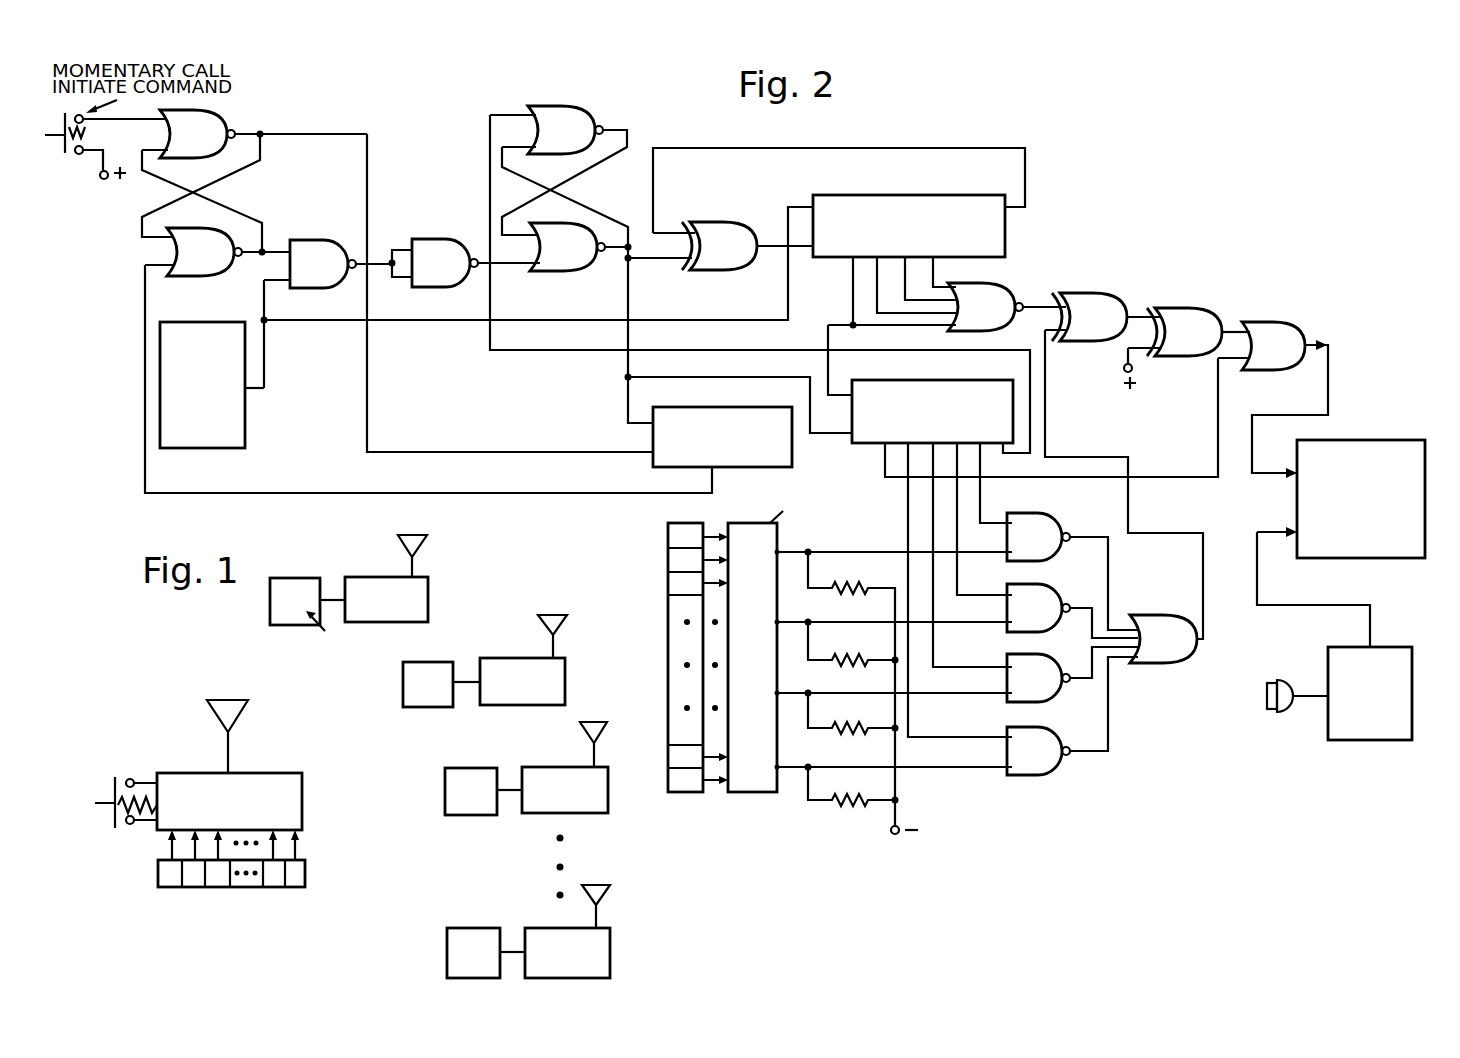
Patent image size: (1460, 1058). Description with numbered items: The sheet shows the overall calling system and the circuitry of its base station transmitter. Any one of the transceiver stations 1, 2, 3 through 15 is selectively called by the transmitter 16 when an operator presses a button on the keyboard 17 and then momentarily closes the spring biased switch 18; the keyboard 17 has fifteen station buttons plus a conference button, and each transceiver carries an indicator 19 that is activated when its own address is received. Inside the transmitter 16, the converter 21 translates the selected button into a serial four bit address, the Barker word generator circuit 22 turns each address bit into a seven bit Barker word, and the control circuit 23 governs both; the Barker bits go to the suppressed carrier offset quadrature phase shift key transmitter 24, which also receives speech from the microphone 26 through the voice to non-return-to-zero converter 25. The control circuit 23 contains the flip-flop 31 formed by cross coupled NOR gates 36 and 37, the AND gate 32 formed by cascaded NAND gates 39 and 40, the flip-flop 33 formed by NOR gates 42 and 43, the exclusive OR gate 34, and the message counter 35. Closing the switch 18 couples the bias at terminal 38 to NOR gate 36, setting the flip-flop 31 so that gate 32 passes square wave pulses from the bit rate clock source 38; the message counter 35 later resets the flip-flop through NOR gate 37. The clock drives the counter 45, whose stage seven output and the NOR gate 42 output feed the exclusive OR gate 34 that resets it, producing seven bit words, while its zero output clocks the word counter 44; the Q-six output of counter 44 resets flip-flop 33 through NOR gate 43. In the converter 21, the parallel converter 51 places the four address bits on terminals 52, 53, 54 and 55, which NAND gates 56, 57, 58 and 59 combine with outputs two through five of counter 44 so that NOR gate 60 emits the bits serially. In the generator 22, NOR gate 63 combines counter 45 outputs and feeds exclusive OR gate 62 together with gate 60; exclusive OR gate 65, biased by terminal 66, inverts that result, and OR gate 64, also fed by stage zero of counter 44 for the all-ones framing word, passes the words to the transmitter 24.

In FIG. 1, the transceiver station 1 is at (428, 597).
In FIG. 1, the transceiver station 2 is at (567, 668).
In FIG. 1, the transceiver station 3 is at (608, 781).
In FIG. 1, the transceiver station 15 is at (610, 942).
In FIG. 1, the transmitter 16 is at (302, 797).
In FIG. 2, the keyboard 17 is at (691, 803).
In FIG. 1, the keyboard 17 is at (240, 897).
In FIG. 2, the spring biased switch 18 is at (64, 152).
In FIG. 1, the spring biased switch 18 is at (112, 783).
In FIG. 1, the indicator 19 is at (313, 578).
In FIG. 2, the converter 21 is at (996, 808).
In FIG. 2, the Barker word generator circuit 22 is at (1084, 176).
In FIG. 2, the control circuit 23 is at (442, 216).
In FIG. 2, the suppressed carrier offset quadrature phase shift key transmitter 24 is at (1383, 440).
In FIG. 2, the voice to non-return-to-zero converter 25 is at (1402, 647).
In FIG. 2, the microphone 26 is at (1288, 712).
In FIG. 2, the flip-flop 31 is at (257, 121).
In FIG. 2, the AND gate 32 is at (350, 232).
In FIG. 2, the flip-flop 33 is at (610, 93).
In FIG. 2, the exclusive OR gate 34 is at (743, 222).
In FIG. 2, the message counter 35 is at (722, 407).
In FIG. 2, the NOR gate 36 is at (209, 149).
In FIG. 2, the NOR gate 37 is at (210, 269).
In FIG. 2, the bit rate clock source 38 is at (100, 179).
In FIG. 2, the NAND gate 39 is at (310, 240).
In FIG. 2, the NAND gate 40 is at (455, 245).
In FIG. 2, the NOR gate 42 is at (571, 266).
In FIG. 2, the NOR gate 43 is at (543, 106).
In FIG. 2, the counter 44 is at (968, 368).
In FIG. 2, the counter 45 is at (873, 195).
In FIG. 2, the one out of sixteen lead to four parallel bit converter 51 is at (753, 792).
In FIG. 2, the output terminal 52 is at (779, 550).
In FIG. 2, the output terminal 53 is at (779, 620).
In FIG. 2, the output terminal 54 is at (779, 691).
In FIG. 2, the output terminal 55 is at (779, 765).
In FIG. 2, the NAND gate 56 is at (1024, 513).
In FIG. 2, the NAND gate 57 is at (1036, 584).
In FIG. 2, the NAND gate 58 is at (1036, 655).
In FIG. 2, the NAND gate 59 is at (1046, 727).
In FIG. 2, the NOR gate 60 is at (1168, 663).
In FIG. 2, the exclusive OR gate 62 is at (1102, 292).
In FIG. 2, the NOR gate 63 is at (990, 287).
In FIG. 2, the OR gate 64 is at (1263, 322).
In FIG. 2, the exclusive OR gate 65 is at (1177, 307).
In FIG. 2, the terminal 66 is at (1124, 367).